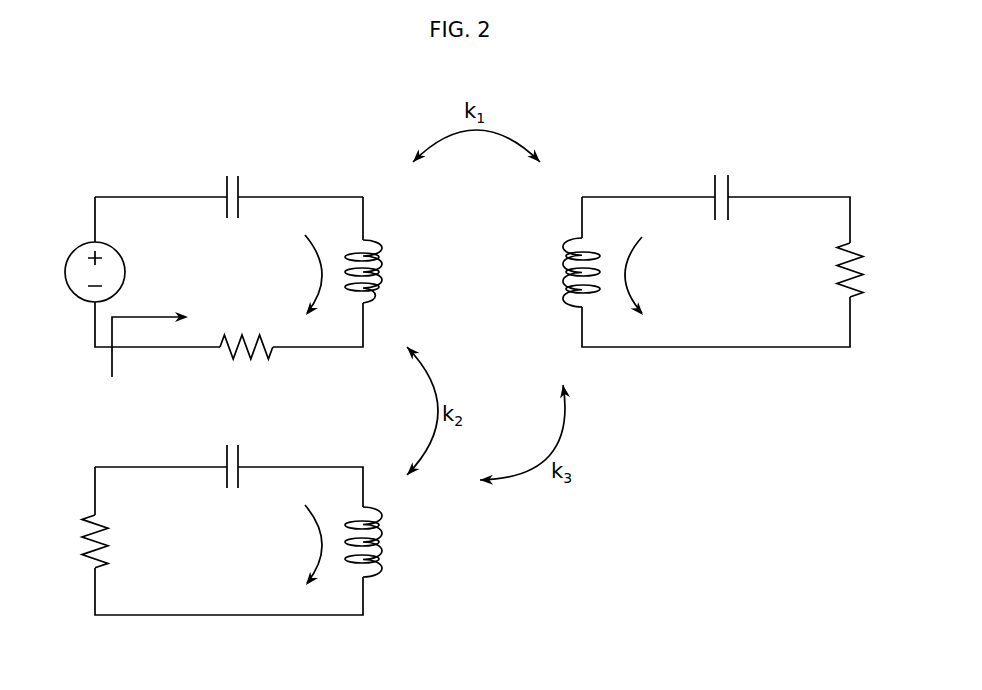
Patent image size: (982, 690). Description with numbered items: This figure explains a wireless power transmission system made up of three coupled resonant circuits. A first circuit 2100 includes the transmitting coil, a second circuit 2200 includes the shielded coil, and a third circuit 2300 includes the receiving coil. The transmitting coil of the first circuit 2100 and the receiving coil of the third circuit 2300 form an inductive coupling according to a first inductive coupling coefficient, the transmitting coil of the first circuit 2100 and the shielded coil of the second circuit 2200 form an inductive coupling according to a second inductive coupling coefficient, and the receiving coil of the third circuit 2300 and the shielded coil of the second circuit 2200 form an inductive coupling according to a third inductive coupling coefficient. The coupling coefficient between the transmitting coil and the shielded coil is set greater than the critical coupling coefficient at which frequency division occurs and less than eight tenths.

The first circuit 2100 is at (158, 195).
The second circuit 2200 is at (228, 617).
The third circuit 2300 is at (717, 348).